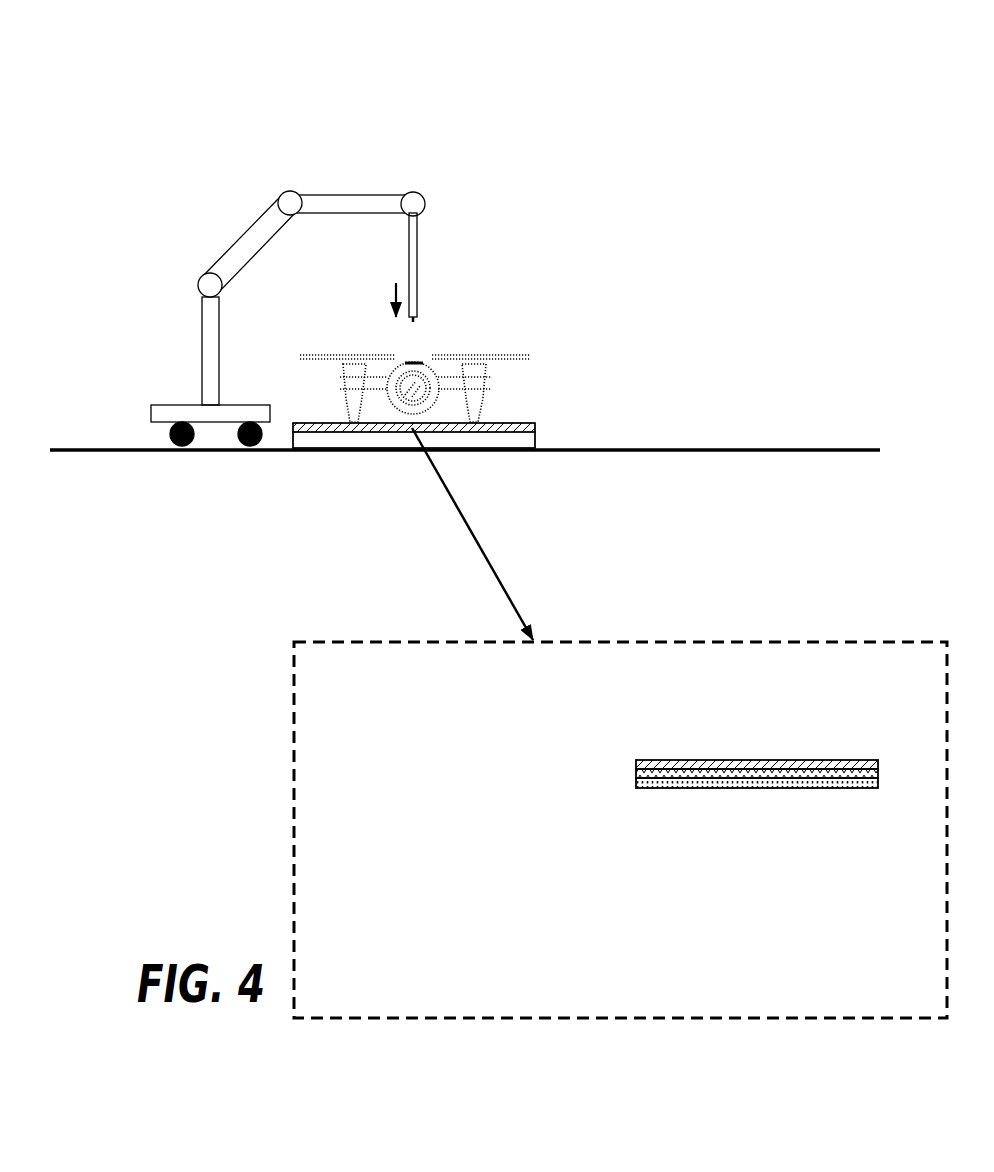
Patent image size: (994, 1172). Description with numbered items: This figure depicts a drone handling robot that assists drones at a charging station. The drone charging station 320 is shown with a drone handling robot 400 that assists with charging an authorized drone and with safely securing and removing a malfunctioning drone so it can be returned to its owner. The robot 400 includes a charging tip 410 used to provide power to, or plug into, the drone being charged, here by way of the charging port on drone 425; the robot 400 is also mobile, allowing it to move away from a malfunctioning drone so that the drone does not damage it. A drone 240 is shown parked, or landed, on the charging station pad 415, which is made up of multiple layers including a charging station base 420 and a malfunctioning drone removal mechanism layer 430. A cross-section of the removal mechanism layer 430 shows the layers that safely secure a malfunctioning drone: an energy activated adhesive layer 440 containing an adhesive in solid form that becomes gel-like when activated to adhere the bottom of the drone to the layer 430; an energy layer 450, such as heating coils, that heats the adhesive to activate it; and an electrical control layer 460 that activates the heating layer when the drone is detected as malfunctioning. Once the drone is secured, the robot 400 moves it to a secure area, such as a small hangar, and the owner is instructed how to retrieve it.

The drone charging station 320 is at (456, 233).
The drone handling robot 400 is at (227, 289).
The charging tip 410 is at (533, 223).
The charging port on drone 425 is at (582, 283).
The drone 240 is at (476, 342).
The malfunctioning drone removal mechanism layer 430 is at (605, 1008).
The charging station base 420 is at (555, 421).
The charging station pad 415 is at (288, 484).
The energy activated adhesive layer 440 is at (601, 728).
The energy layer 450 is at (595, 793).
The electrical control layer 460 is at (595, 836).